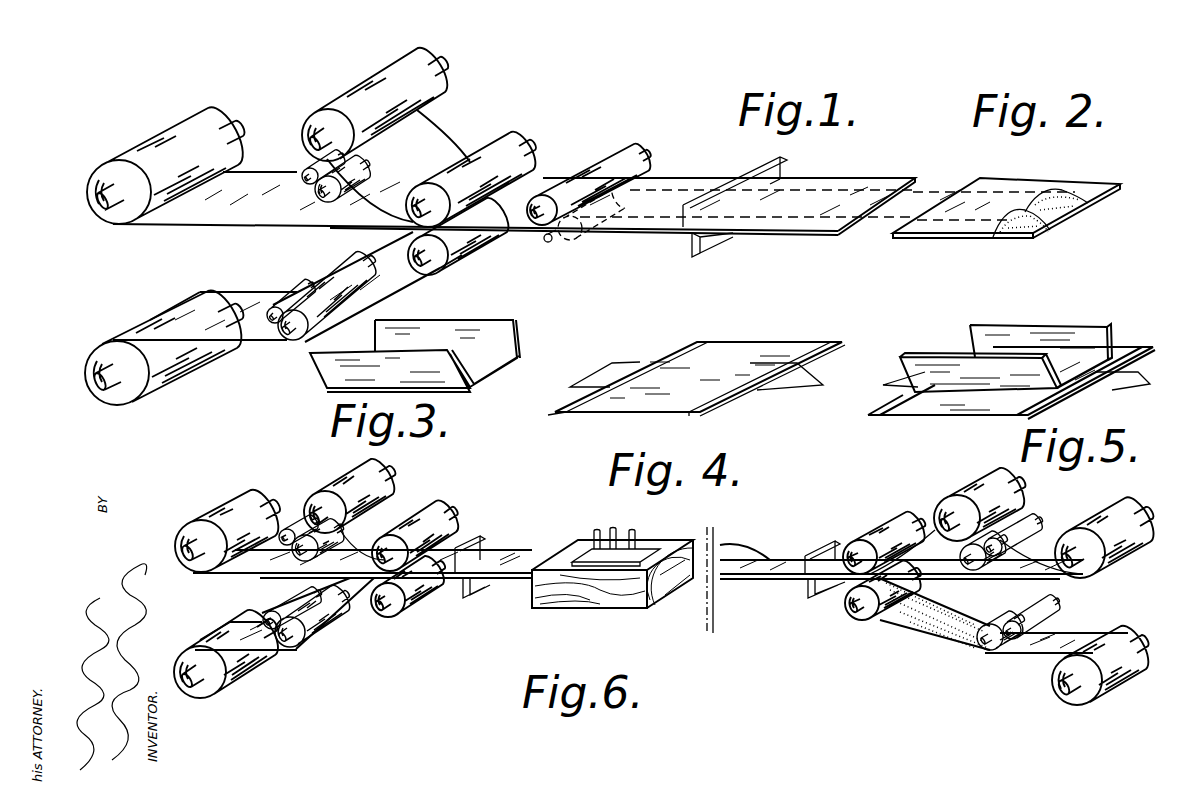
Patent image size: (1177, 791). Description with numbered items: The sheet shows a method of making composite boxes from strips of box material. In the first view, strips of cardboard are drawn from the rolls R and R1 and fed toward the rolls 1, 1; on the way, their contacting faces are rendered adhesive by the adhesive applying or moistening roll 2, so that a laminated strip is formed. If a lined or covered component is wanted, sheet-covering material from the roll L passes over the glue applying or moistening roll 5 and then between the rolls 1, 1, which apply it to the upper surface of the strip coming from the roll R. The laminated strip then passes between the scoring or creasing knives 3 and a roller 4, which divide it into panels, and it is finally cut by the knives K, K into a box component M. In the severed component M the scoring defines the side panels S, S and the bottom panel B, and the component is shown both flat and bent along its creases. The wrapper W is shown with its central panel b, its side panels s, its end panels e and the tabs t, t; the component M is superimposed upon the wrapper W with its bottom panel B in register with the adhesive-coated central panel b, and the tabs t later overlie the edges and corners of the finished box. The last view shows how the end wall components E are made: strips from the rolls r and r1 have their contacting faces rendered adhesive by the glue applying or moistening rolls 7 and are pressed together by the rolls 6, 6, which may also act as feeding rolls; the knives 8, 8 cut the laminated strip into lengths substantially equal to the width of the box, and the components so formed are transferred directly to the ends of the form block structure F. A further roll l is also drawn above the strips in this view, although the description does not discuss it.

In FIG. 1, the roll R is at (237, 153).
In FIG. 1, the roll L is at (387, 63).
In FIG. 1, the glue applying or moistening roll 5 is at (337, 200).
In FIG. 1, the rolls 1 is at (530, 136).
In FIG. 1, the roller 4 is at (615, 155).
In FIG. 1, the scoring or creasing knives 3 is at (570, 237).
In FIG. 1, the knives K is at (787, 159).
In FIG. 1, the adhesive applying or moistening roll 2 is at (380, 262).
In FIG. 1, the roll R1 is at (147, 392).
In FIG. 2, the box component M is at (977, 187).
In FIG. 5, the box component M is at (998, 337).
In FIG. 2, the side panels S is at (1027, 187).
In FIG. 2, the bottom panel B is at (977, 210).
In FIG. 4, the tabs t is at (687, 342).
In FIG. 4, the side panels s is at (750, 347).
In FIG. 5, the side panels s is at (1120, 347).
In FIG. 4, the central panel b is at (727, 370).
In FIG. 4, the end panels e is at (608, 368).
In FIG. 5, the end panels e is at (1113, 377).
In FIG. 4, the wrapper W is at (667, 398).
In FIG. 6, the roll r is at (242, 493).
In FIG. 6, the lining roll l is at (345, 467).
In FIG. 6, the rolls 6 is at (433, 517).
In FIG. 6, the glue applying or moistening rolls 7 is at (337, 593).
In FIG. 6, the knives 8 is at (480, 545).
In FIG. 6, the end wall components E is at (510, 558).
In FIG. 6, the form block structure F is at (583, 610).
In FIG. 6, the roll r1 is at (227, 685).